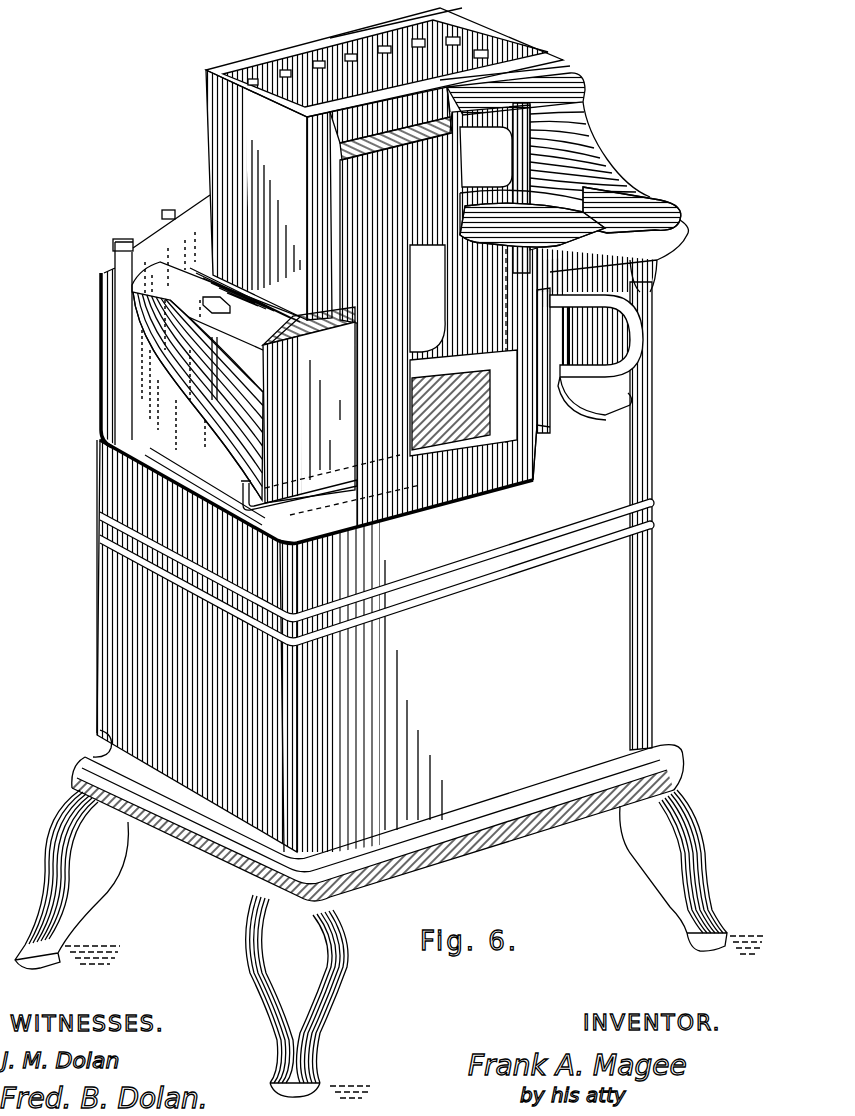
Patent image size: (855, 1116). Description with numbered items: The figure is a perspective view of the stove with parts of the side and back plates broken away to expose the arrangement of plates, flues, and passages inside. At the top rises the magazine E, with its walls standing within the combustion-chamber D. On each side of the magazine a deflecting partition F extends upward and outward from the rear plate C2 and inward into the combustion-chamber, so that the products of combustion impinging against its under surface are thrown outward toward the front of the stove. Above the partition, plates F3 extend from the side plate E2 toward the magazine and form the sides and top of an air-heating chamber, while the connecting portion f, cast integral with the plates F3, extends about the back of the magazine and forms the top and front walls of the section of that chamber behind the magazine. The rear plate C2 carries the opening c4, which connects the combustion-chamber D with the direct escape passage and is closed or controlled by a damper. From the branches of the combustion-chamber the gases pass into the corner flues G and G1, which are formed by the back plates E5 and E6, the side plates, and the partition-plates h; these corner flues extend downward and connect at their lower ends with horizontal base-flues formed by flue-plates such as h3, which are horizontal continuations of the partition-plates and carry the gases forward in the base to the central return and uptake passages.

The magazine E is at (384, 164).
The side plate E2 is at (197, 646).
The back plate E5 is at (377, 664).
The back plate E6 is at (376, 562).
The partition F is at (198, 396).
The plate F3 is at (216, 306).
The connecting portion f is at (309, 326).
The plate C2 is at (309, 412).
The opening c4 is at (461, 239).
The partition-plate h is at (444, 315).
The flue-plate h3 is at (463, 421).
The combustion-chamber D is at (203, 412).
The corner flue G is at (330, 493).
The corner flue G1 is at (596, 357).